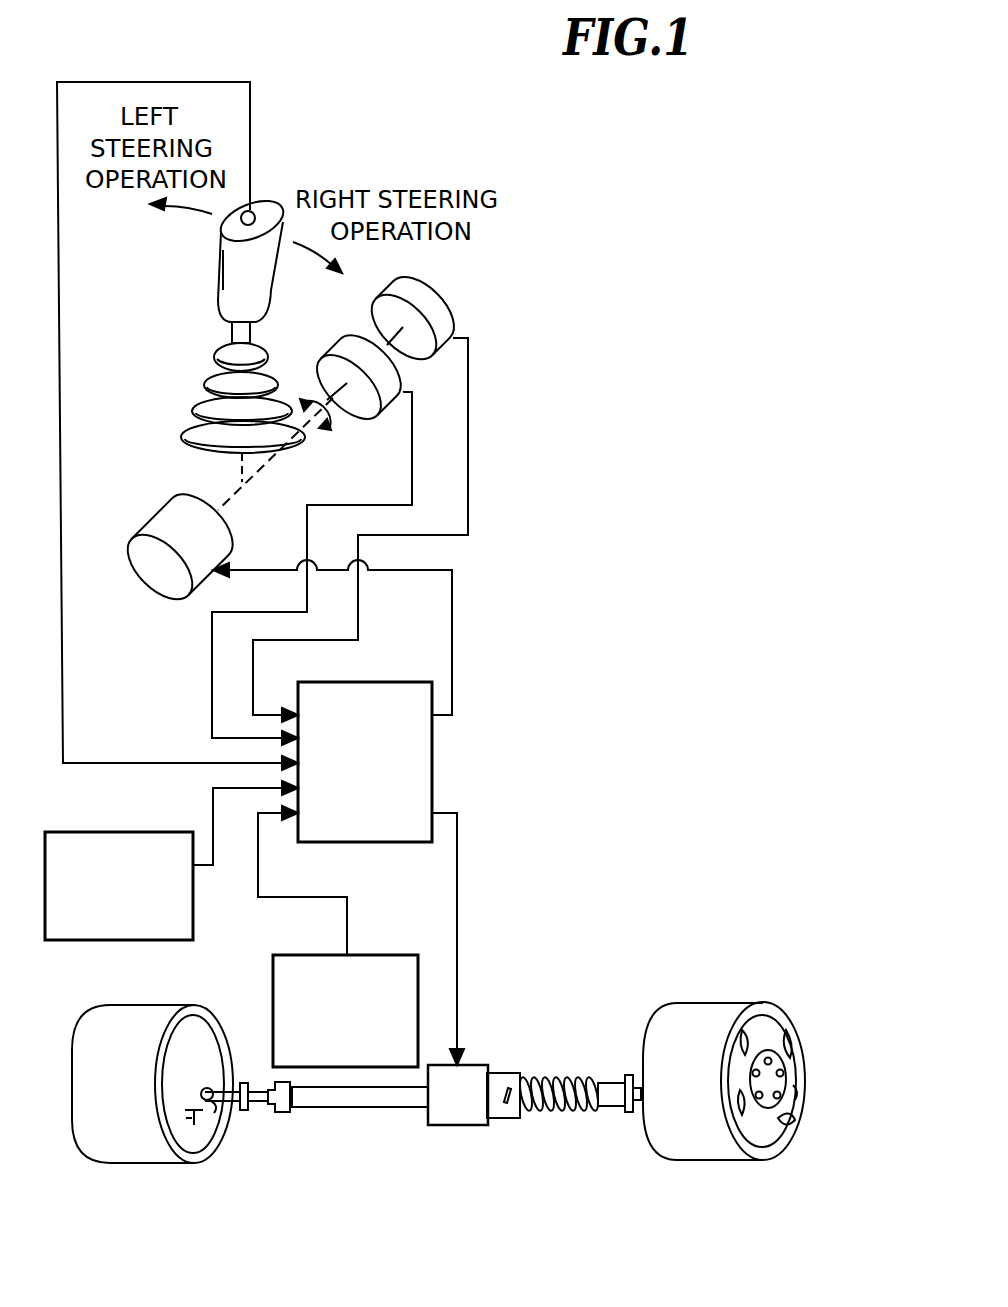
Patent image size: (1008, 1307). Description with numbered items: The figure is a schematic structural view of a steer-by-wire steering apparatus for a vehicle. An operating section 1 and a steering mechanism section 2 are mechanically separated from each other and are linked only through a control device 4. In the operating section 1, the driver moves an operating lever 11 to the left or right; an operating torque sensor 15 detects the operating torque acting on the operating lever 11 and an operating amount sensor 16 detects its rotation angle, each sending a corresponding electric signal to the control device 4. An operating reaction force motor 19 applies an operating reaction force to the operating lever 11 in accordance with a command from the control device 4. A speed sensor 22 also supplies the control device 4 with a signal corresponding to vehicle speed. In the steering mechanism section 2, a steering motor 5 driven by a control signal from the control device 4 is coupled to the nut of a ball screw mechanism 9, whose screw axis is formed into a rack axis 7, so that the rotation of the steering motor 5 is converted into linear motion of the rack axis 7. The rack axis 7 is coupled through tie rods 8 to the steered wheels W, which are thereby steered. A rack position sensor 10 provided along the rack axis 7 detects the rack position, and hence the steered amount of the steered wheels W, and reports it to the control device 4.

The operating section 1 is at (232, 294).
The steering mechanism section 2 is at (418, 1050).
The control device 4 is at (382, 828).
The steering motor 5 is at (457, 1121).
The rack axis 7 is at (610, 1083).
The tie rod 8 is at (230, 1118).
The ball screw mechanism 9 is at (554, 1062).
The rack position sensor 10 is at (273, 990).
The operating lever 11 is at (222, 296).
The operating torque sensor 15 is at (342, 340).
The operating amount sensor 16 is at (444, 307).
The operating reaction force motor 19 is at (168, 519).
The speed sensor 22 is at (118, 832).
The steered wheel W is at (90, 1022).